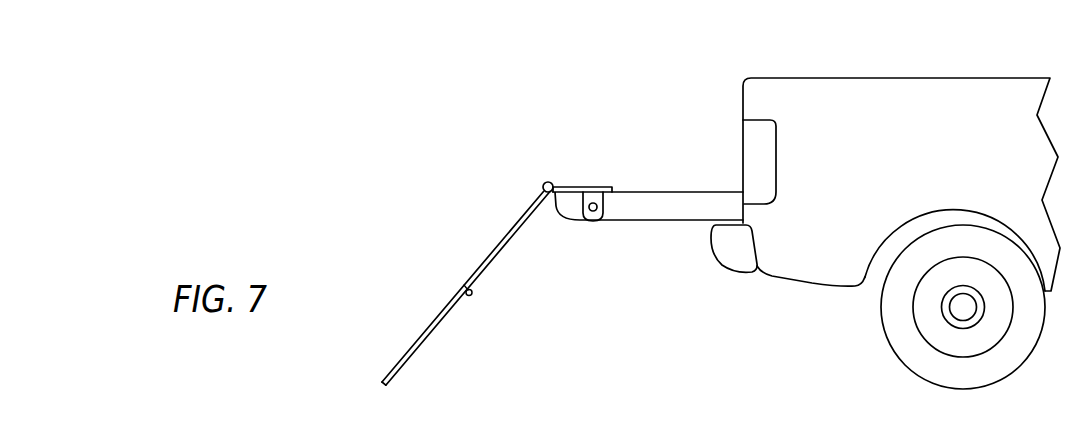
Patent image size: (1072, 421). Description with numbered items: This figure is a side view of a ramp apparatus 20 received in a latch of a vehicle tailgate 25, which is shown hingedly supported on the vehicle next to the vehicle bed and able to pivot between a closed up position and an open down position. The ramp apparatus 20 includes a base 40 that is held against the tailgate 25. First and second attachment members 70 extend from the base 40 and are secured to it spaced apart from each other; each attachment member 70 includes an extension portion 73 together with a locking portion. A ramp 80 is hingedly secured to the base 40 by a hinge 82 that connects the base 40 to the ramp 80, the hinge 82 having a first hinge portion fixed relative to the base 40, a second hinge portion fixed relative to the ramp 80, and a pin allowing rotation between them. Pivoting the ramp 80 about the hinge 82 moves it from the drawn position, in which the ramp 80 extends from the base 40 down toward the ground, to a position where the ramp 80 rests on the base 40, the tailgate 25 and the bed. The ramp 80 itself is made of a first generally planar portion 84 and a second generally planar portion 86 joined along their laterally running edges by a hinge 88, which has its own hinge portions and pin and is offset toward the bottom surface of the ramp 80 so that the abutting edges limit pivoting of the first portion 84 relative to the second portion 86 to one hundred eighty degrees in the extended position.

The ramp apparatus 20 is at (402, 250).
The tailgate 25 is at (672, 208).
The base 40 is at (595, 186).
The attachment member 70 is at (591, 221).
The extension portion 73 is at (602, 220).
The ramp 80 is at (495, 260).
The hinge 82 is at (548, 181).
The first generally planar portion 84 is at (483, 262).
The second generally planar portion 86 is at (407, 353).
The hinge 88 is at (471, 296).